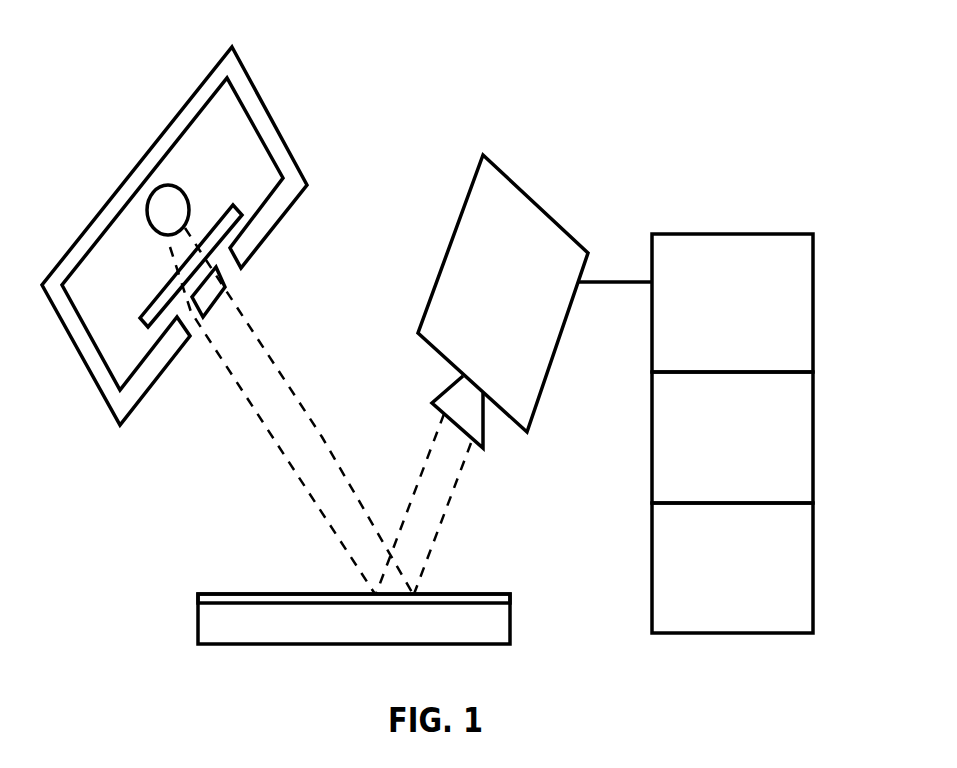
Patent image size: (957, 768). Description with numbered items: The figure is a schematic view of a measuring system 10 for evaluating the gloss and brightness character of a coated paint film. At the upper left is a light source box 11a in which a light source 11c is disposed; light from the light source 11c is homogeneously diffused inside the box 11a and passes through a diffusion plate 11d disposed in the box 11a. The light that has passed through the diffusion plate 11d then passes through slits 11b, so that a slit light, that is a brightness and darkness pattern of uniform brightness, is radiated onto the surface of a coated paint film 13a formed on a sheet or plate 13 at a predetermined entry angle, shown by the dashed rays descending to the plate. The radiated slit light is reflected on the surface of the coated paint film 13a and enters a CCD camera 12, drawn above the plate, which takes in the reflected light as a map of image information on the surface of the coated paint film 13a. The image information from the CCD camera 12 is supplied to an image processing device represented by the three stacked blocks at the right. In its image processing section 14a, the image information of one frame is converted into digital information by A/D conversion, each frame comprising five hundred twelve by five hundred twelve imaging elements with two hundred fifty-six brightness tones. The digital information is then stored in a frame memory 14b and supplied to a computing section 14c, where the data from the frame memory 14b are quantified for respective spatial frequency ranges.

The measuring system 10 is at (612, 81).
The light source box 11a is at (242, 64).
The slits 11b is at (226, 289).
The light source 11c is at (185, 191).
The diffusion plate 11d is at (242, 217).
The CCD camera 12 is at (515, 183).
The sheet or plate 13 is at (390, 581).
The coated paint film 13a is at (473, 593).
The image processing section 14a is at (815, 301).
The frame memory 14b is at (815, 432).
The computing section 14c is at (815, 566).